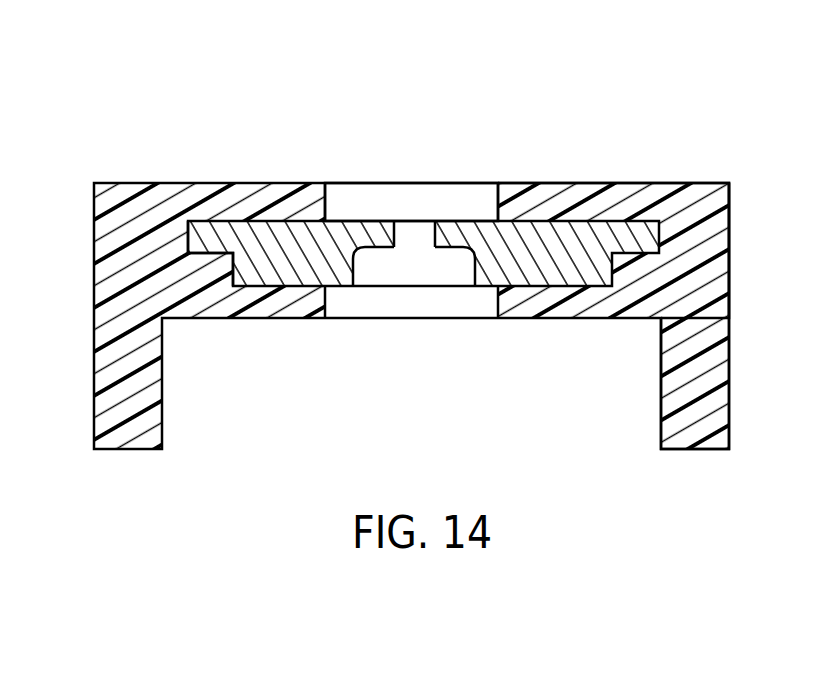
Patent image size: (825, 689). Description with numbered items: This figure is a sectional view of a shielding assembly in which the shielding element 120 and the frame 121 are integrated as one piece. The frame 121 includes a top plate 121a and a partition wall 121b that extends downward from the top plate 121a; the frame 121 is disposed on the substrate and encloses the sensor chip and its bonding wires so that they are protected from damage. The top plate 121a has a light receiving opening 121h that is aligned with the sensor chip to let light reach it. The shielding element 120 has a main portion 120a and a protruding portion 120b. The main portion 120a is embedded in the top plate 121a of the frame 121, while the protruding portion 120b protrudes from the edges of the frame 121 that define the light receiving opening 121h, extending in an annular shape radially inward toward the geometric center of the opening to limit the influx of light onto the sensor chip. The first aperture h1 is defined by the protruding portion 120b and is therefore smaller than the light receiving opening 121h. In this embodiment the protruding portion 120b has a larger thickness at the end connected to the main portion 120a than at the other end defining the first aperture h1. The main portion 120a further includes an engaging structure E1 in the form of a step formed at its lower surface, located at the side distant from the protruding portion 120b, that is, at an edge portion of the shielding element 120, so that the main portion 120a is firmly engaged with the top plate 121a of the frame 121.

The frame 121 is at (778, 113).
The top plate 121a is at (585, 191).
The partition wall 121b is at (703, 317).
The light receiving opening 121h is at (350, 176).
The shielding element 120 is at (403, 371).
The main portion 120a is at (297, 264).
The protruding portion 120b is at (380, 235).
The first aperture h1 is at (413, 209).
The engaging structure E1 is at (213, 265).